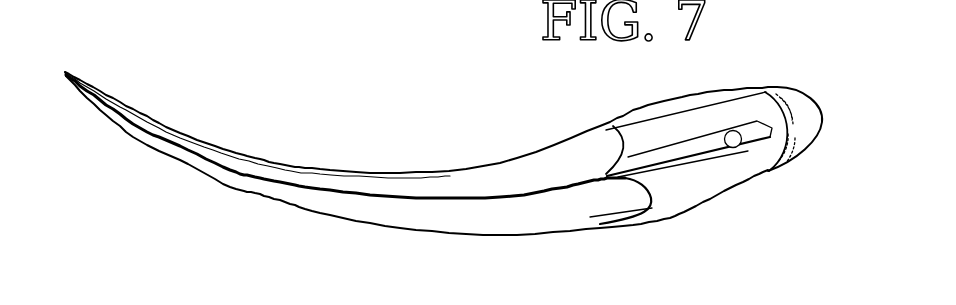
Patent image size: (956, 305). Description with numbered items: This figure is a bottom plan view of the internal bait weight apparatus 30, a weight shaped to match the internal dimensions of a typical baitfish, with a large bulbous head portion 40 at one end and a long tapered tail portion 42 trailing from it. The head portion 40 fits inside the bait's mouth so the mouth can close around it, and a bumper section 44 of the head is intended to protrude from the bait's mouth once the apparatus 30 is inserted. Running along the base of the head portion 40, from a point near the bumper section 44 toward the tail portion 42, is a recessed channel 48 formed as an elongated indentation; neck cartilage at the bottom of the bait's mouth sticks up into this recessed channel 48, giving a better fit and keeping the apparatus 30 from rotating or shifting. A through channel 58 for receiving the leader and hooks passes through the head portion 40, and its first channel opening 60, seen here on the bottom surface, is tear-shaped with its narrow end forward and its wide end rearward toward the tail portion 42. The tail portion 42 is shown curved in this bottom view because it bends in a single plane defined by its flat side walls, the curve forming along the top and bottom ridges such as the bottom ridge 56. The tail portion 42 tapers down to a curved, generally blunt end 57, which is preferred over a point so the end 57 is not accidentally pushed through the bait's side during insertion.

The internal bait weight apparatus 30 is at (378, 141).
The bulbous head portion 40 is at (735, 198).
The tapered tail portion 42 is at (545, 238).
The bumper section 44 is at (822, 112).
The recessed channel 48 is at (660, 150).
The bottom ridge 56 is at (370, 200).
The blunt end 57 is at (64, 77).
The through channel 58 is at (748, 151).
The first channel opening 60 is at (757, 121).